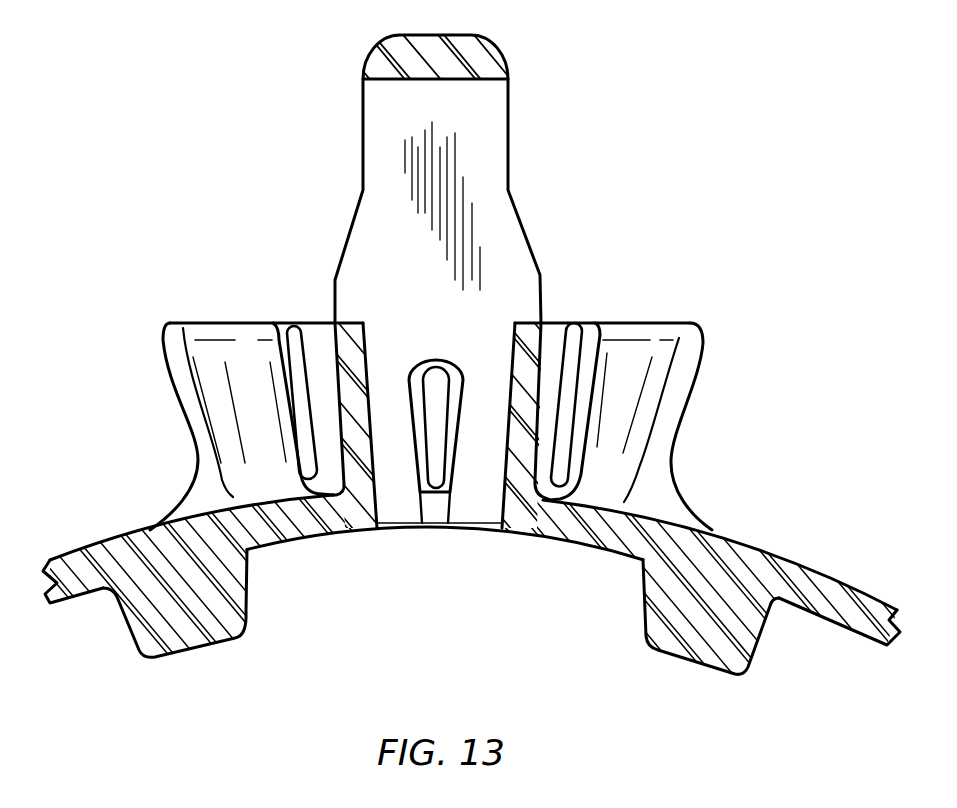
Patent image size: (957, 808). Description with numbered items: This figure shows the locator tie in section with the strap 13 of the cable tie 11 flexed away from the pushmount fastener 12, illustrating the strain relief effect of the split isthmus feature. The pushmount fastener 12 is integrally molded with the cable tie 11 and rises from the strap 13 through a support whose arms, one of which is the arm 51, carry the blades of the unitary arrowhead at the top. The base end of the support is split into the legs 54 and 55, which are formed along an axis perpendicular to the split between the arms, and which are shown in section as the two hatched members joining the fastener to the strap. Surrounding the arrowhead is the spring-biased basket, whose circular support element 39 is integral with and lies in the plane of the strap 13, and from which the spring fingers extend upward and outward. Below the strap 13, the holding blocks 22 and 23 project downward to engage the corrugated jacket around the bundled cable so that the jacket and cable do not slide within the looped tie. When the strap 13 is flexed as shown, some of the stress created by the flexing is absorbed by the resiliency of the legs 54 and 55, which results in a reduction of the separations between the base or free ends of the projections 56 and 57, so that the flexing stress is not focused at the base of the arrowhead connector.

The cable tie 11 is at (792, 570).
The pushmount fastener 12 is at (419, 315).
The strap 13 is at (473, 55).
The holding block 22 is at (203, 632).
The holding block 23 is at (697, 655).
The circular support element 39 is at (433, 520).
The arm 51 is at (490, 172).
The leg 54 is at (528, 337).
The leg 55 is at (346, 330).
The projection 56 is at (524, 520).
The projection 57 is at (347, 523).